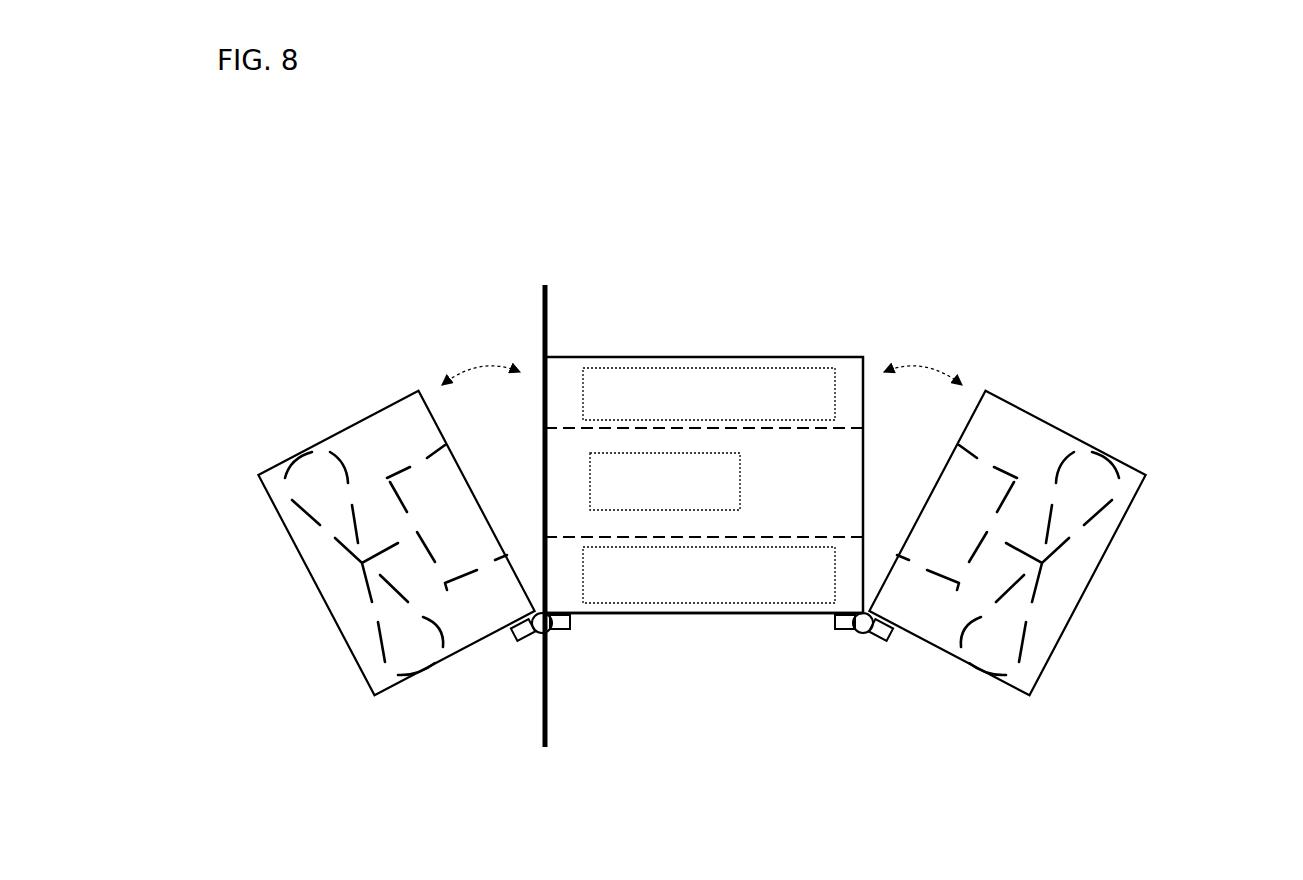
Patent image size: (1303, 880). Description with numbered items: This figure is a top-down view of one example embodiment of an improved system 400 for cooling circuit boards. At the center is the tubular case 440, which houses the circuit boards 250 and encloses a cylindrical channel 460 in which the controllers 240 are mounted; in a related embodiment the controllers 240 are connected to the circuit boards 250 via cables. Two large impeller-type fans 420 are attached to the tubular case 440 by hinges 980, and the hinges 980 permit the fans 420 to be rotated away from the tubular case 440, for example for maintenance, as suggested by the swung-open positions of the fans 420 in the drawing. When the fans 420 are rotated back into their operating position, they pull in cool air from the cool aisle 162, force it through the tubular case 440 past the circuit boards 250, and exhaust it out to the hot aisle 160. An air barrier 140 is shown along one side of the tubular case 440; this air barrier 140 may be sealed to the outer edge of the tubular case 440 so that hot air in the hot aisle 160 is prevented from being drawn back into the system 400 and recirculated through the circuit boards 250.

The air barrier 140 is at (551, 680).
The hot aisle 160 is at (245, 706).
The cool aisle 162 is at (1150, 700).
The controllers 240 is at (665, 481).
The circuit boards 250 is at (709, 485).
The system for cooling circuit boards 400 is at (794, 434).
The impeller-type fans 420 is at (385, 405).
The tubular case 440 is at (675, 615).
The cylindrical channel 460 is at (704, 485).
The hinges 980 is at (863, 634).